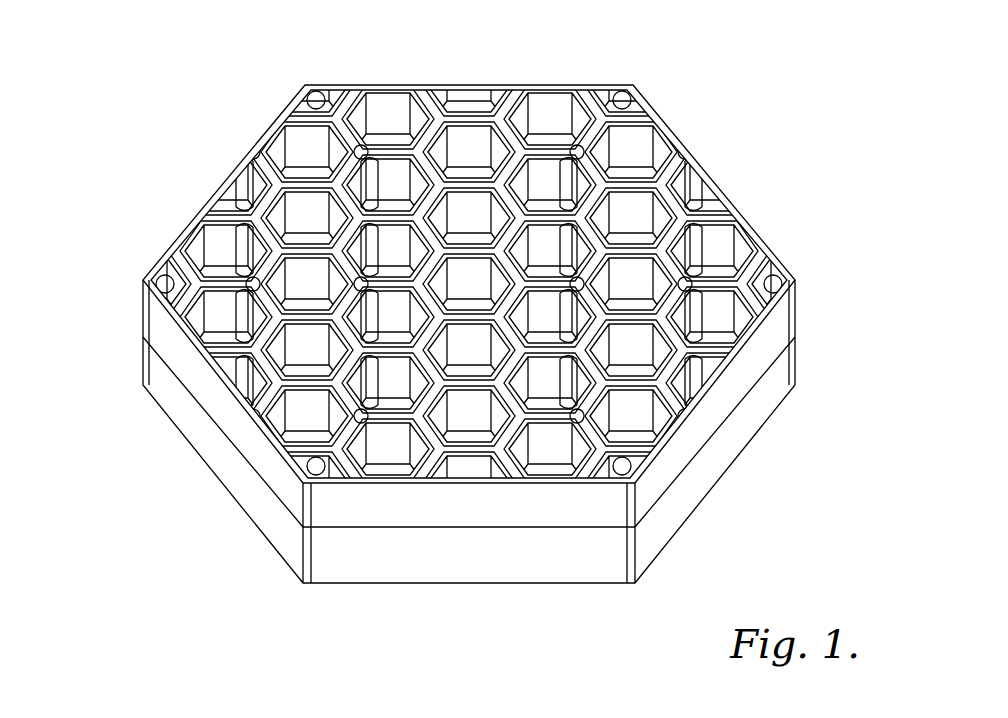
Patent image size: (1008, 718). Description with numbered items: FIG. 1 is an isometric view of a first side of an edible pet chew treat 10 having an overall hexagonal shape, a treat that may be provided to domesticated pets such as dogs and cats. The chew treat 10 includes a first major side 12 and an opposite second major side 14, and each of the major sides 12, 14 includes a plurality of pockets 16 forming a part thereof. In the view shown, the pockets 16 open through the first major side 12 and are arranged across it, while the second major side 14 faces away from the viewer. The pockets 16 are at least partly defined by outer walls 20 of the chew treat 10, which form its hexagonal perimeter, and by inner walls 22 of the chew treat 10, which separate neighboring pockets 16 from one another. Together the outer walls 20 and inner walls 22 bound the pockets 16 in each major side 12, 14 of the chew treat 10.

The chew treat 10 is at (148, 110).
The first major side 12 is at (765, 165).
The second major side 14 is at (750, 474).
The pockets 16 is at (632, 148).
The outer walls 20 is at (263, 128).
The inner walls 22 is at (422, 118).